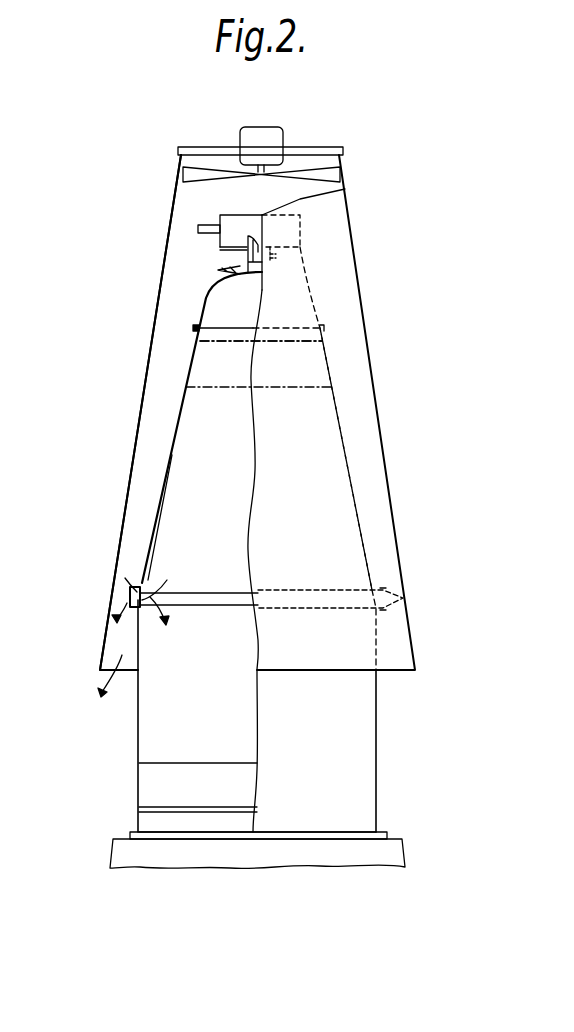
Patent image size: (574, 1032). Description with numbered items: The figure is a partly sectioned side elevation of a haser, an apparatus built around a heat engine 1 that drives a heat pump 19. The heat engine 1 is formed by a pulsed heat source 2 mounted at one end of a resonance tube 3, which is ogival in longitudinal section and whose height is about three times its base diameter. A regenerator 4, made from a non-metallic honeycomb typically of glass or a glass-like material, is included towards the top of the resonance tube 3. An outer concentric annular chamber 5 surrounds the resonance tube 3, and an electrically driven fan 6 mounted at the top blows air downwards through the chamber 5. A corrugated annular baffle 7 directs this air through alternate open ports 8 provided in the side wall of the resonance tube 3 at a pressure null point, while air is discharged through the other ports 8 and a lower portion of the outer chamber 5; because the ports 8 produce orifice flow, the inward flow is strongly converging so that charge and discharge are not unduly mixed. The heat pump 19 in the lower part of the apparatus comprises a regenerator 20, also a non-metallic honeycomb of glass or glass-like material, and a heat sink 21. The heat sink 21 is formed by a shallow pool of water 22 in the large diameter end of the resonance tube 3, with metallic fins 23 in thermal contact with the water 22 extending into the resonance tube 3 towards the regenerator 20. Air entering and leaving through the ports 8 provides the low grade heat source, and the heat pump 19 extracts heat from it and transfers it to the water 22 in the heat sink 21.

The heat engine 1 is at (447, 270).
The pulsed heat source 2 is at (236, 255).
The resonance tube 3 is at (160, 515).
The regenerator 4 is at (320, 383).
The outer concentric annular chamber 5 is at (167, 317).
The electrically driven fan 6 is at (320, 172).
The corrugated annular baffle 7 is at (113, 595).
The open ports 8 is at (135, 585).
The heat pump 19 is at (445, 750).
The regenerator 20 is at (147, 777).
The heat sink 21 is at (120, 825).
The shallow pool of water 22 is at (182, 839).
The metallic fins 23 is at (145, 818).